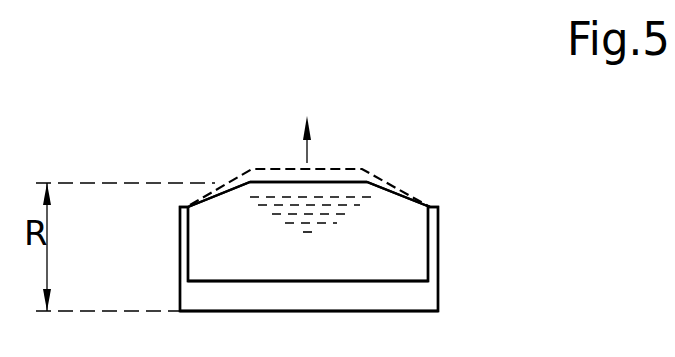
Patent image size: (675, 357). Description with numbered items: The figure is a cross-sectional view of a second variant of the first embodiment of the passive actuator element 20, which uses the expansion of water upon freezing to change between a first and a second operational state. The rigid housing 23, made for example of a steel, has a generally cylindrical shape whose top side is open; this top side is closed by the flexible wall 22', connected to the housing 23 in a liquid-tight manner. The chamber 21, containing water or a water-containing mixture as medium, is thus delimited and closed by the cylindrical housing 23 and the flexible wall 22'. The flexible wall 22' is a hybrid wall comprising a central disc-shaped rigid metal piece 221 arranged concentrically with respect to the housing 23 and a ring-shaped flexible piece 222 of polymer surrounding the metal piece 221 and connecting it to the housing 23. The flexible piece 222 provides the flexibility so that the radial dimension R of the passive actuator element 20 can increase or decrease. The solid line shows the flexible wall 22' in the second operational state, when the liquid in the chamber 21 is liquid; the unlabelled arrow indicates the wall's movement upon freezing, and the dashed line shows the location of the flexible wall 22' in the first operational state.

The passive actuator element 20 is at (474, 148).
The chamber 21 is at (250, 262).
The flexible wall 22' is at (316, 147).
The metal piece 221 is at (277, 182).
The flexible piece 222 is at (213, 195).
The housing 23 is at (424, 299).